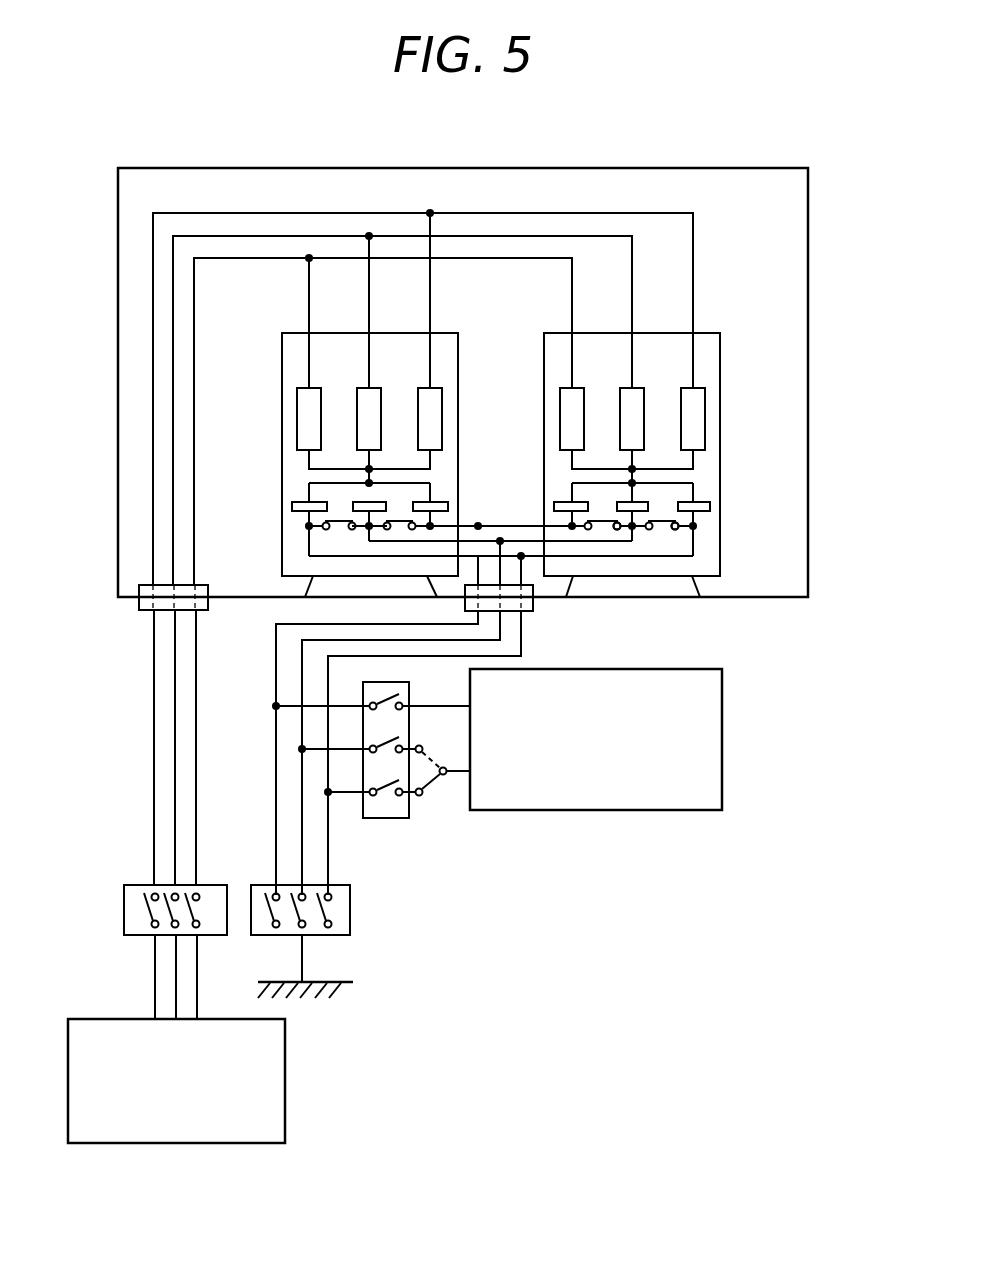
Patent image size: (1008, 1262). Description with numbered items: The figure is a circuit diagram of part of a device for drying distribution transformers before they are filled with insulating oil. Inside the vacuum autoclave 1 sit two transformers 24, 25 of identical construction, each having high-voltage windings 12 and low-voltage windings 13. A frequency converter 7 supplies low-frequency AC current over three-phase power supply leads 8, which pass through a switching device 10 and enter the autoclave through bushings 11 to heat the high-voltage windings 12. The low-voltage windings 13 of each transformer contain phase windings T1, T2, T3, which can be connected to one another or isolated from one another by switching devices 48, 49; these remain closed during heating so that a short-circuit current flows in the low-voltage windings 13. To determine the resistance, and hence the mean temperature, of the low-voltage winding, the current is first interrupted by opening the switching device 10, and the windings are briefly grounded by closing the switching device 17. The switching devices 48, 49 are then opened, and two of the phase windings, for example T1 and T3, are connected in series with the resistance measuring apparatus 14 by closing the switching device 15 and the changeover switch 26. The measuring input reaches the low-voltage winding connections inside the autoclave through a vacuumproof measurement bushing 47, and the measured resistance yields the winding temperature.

The vacuum autoclave 1 is at (808, 369).
The frequency converter 7 is at (285, 1078).
The three-phase power supply leads 8 is at (196, 769).
The switching device 10 is at (123, 928).
The bushings 11 is at (143, 607).
The high-voltage windings 12 is at (374, 388).
The low-voltage windings 13 is at (373, 502).
The resistance measuring apparatus 14 is at (722, 735).
The switching device 15 is at (400, 818).
The switching device 17 is at (352, 930).
The transformer 24 is at (395, 437).
The transformer 25 is at (683, 439).
The changeover switch 26 is at (430, 787).
The vacuumproof measurement bushing 47 is at (532, 608).
The switching device 48 is at (619, 530).
The switching device 49 is at (677, 530).
The phase winding T1 is at (560, 502).
The phase winding T2 is at (648, 500).
The phase winding T3 is at (710, 505).